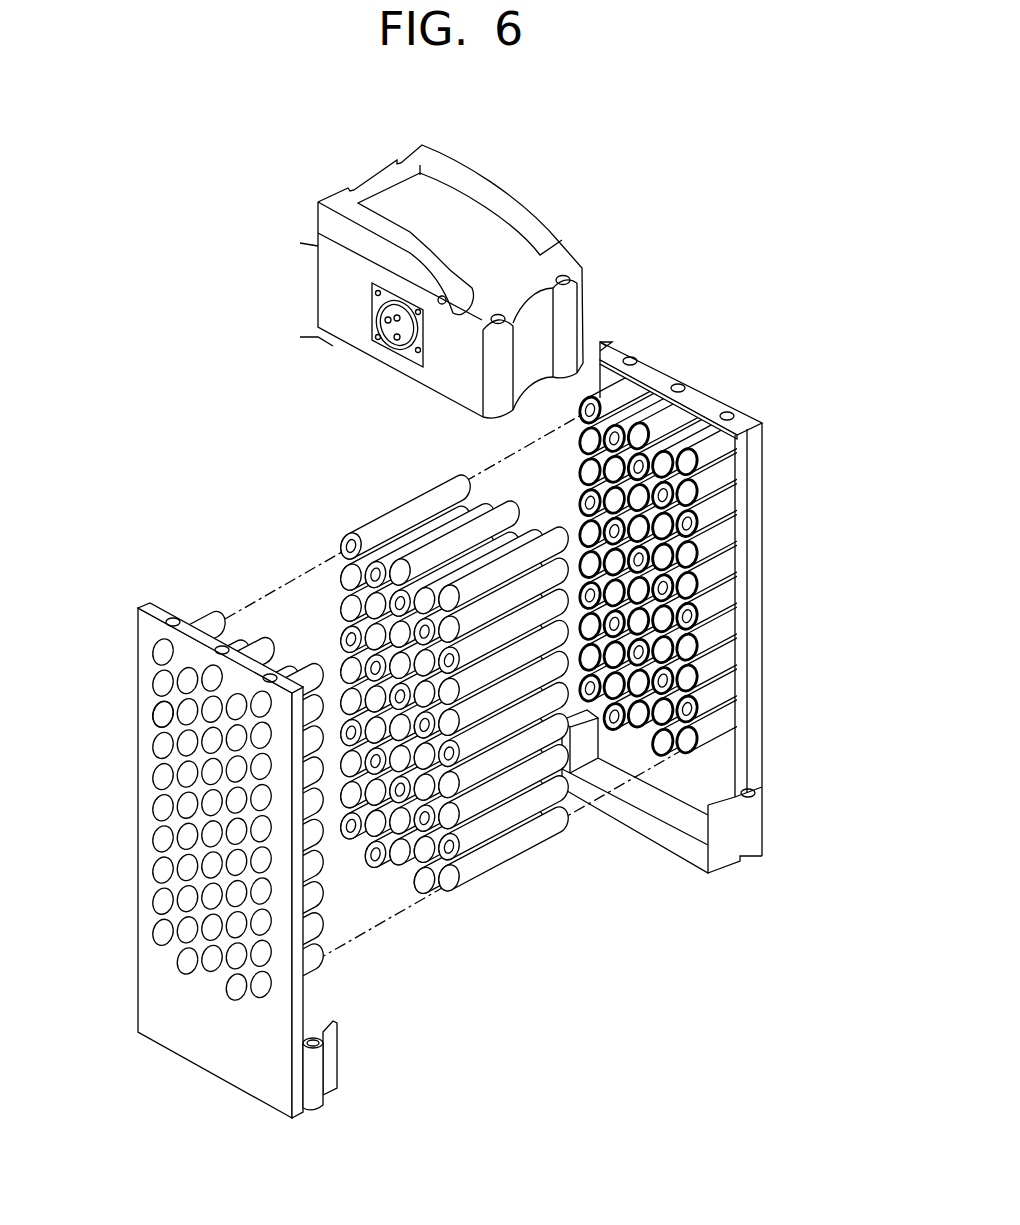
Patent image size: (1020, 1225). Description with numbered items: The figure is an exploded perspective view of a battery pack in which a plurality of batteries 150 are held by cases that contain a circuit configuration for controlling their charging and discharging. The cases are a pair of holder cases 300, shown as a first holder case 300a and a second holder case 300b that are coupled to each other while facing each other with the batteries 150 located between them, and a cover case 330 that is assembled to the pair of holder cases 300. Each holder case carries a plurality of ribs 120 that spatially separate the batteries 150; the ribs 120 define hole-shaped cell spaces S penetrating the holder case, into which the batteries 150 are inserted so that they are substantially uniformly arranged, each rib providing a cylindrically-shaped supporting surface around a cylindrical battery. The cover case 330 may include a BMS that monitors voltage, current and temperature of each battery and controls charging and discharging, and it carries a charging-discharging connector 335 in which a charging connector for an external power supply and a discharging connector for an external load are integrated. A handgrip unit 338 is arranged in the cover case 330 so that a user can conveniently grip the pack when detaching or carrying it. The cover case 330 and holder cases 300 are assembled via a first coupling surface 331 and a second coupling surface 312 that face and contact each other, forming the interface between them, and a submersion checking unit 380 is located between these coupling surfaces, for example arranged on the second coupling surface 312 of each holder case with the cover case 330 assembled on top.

The holder cases 300 is at (126, 937).
The first holder case 300a is at (148, 847).
The second holder case 300b is at (662, 372).
The second coupling surface 312 is at (620, 348).
The submersion checking unit 380 is at (727, 416).
The cell space S is at (152, 717).
The ribs 120 is at (262, 630).
The batteries 150 is at (384, 516).
The cover case 330 is at (316, 246).
The first coupling surface 331 is at (302, 343).
The charging-discharging connector 335 is at (392, 350).
The handgrip unit 338 is at (487, 187).